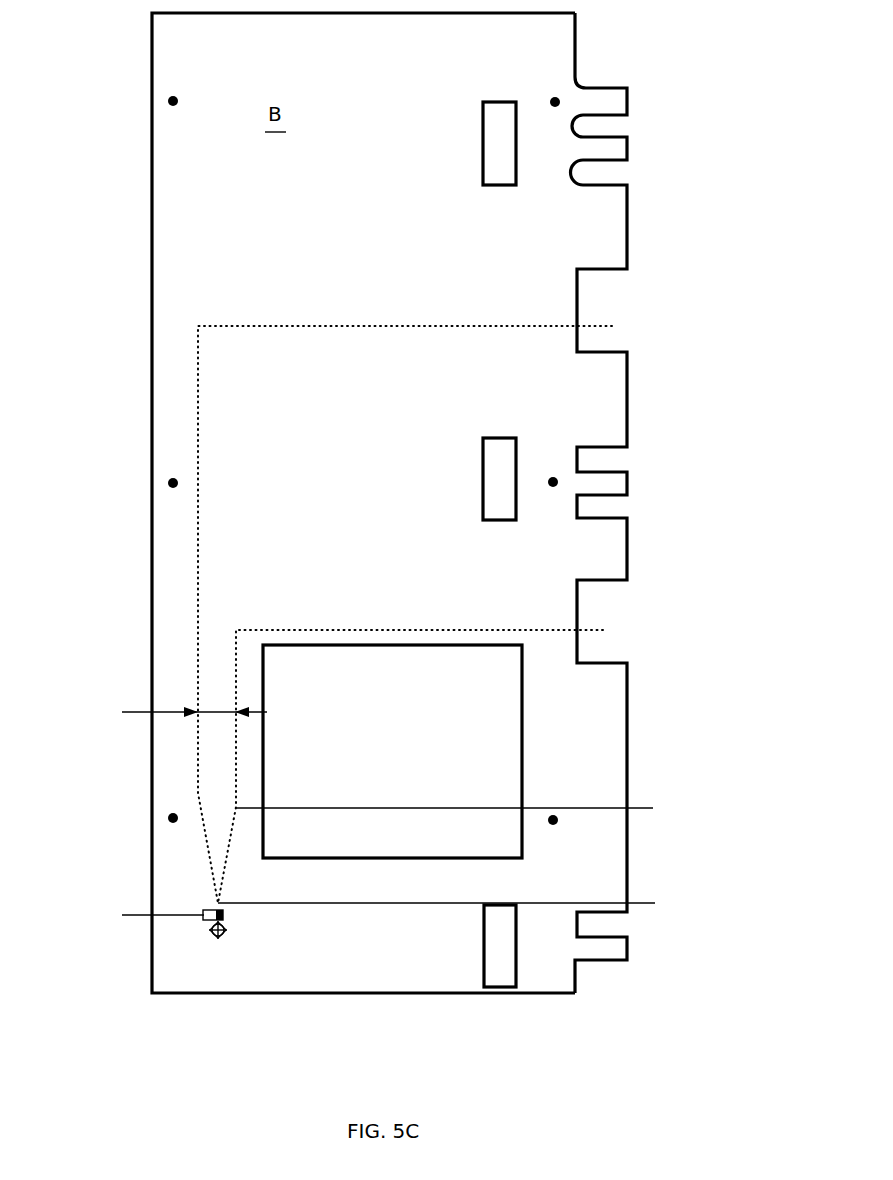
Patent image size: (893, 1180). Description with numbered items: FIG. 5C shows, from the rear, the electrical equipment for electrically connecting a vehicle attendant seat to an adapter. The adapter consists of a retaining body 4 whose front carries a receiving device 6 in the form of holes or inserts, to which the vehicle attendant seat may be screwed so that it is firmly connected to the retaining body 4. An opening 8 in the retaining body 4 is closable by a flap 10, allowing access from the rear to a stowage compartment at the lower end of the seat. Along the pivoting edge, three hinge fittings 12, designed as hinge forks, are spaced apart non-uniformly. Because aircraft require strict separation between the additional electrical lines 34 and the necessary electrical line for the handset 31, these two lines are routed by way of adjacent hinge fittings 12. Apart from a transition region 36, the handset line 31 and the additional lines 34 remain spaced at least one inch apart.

The retaining body 4 is at (263, 980).
The receiving device 6 is at (200, 93).
The opening 8 is at (366, 876).
The flap 10 is at (392, 748).
The hinge fittings 12 is at (665, 141).
The electrical line for the handset 31 is at (398, 605).
The additional electrical lines 34 is at (398, 305).
The transition region 36 is at (108, 798).